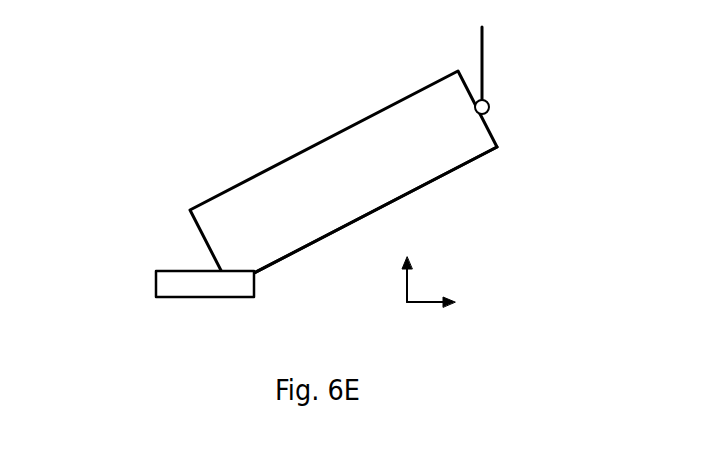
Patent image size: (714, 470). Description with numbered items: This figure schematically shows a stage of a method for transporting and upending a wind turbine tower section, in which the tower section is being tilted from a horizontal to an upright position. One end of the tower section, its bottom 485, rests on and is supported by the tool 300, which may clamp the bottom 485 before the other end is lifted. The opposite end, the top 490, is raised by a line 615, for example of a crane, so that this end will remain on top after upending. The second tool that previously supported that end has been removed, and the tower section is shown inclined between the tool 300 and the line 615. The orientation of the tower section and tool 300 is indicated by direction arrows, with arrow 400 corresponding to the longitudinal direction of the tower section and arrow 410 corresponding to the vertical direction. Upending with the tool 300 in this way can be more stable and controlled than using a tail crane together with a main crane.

The bottom of the tower section 485 is at (227, 193).
The top of the tower section 490 is at (452, 173).
The line 615 is at (484, 53).
The tool 300 is at (165, 283).
The direction arrow 410 is at (383, 280).
The direction arrow 400 is at (430, 318).